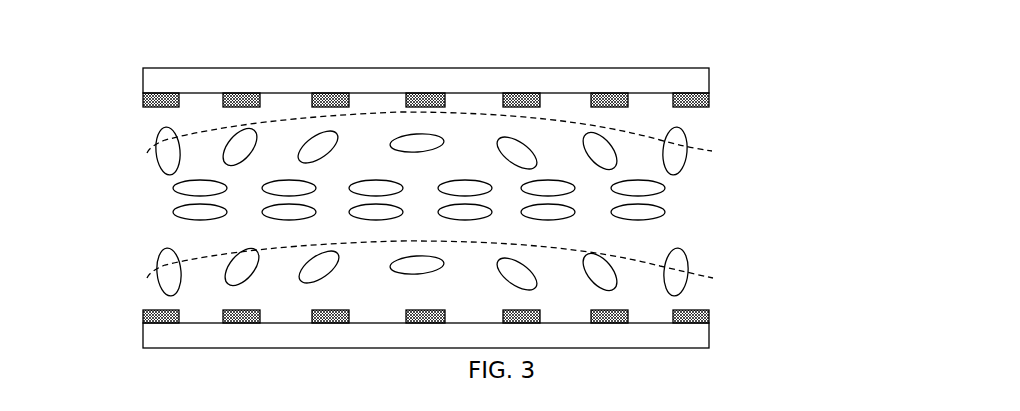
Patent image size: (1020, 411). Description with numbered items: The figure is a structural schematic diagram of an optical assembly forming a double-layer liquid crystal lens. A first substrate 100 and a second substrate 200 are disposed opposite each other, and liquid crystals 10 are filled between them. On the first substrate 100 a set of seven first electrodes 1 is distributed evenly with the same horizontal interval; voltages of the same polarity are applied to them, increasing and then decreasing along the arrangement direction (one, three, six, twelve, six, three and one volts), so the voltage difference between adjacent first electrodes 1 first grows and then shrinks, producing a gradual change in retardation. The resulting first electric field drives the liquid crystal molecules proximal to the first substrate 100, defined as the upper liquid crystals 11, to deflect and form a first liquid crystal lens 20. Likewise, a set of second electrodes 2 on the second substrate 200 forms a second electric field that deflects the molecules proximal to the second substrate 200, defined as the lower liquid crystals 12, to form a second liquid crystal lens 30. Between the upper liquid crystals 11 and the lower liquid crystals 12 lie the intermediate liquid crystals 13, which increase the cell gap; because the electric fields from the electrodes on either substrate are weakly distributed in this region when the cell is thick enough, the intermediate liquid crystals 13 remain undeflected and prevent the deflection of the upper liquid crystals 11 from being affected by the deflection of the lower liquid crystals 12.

The first electrode 1 is at (174, 97).
The second electrode 2 is at (693, 318).
The liquid crystals 10 is at (887, 153).
The upper liquid crystals 11 is at (710, 157).
The lower liquid crystals 12 is at (710, 285).
The intermediate liquid crystals 13 is at (710, 202).
The first liquid crystal lens 20 is at (197, 132).
The second liquid crystal lens 30 is at (225, 253).
The first substrate 100 is at (680, 82).
The second substrate 200 is at (680, 336).